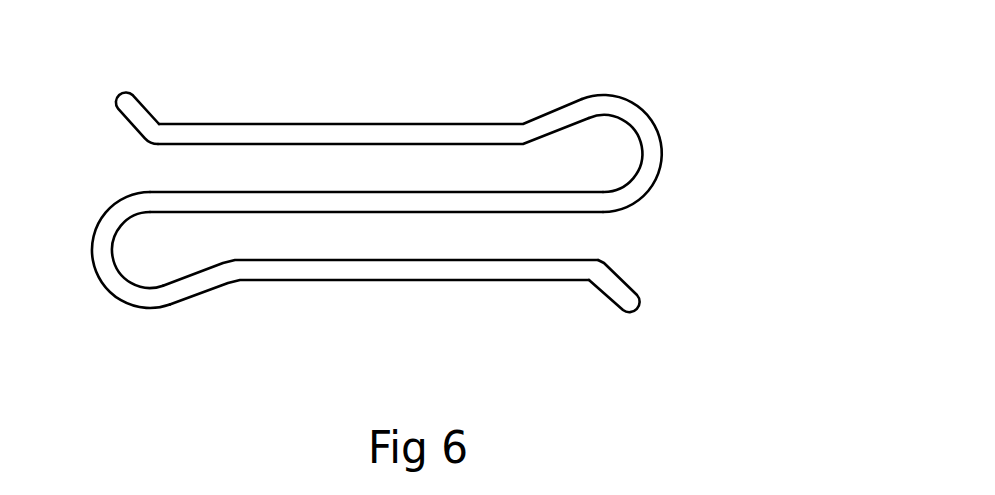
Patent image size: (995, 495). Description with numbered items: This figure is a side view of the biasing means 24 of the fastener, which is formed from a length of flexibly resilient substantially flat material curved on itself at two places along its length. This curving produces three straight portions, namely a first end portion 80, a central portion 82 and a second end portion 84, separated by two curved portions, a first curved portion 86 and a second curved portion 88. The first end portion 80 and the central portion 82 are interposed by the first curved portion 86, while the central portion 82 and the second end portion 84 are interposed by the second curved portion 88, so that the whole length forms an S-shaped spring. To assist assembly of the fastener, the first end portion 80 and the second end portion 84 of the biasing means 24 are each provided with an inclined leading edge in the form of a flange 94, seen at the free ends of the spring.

The biasing means 24 is at (420, 199).
The first end portion 80 is at (340, 125).
The central portion 82 is at (423, 190).
The second end portion 84 is at (362, 281).
The first curved portion 86 is at (665, 150).
The second curved portion 88 is at (104, 289).
The flange 94 is at (147, 108).